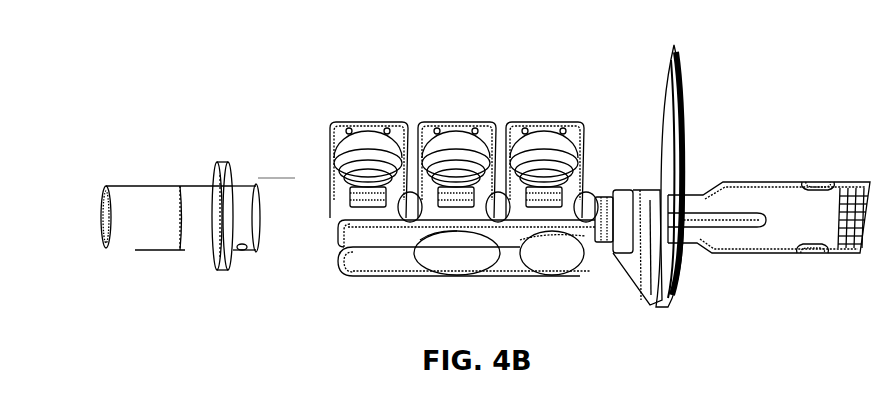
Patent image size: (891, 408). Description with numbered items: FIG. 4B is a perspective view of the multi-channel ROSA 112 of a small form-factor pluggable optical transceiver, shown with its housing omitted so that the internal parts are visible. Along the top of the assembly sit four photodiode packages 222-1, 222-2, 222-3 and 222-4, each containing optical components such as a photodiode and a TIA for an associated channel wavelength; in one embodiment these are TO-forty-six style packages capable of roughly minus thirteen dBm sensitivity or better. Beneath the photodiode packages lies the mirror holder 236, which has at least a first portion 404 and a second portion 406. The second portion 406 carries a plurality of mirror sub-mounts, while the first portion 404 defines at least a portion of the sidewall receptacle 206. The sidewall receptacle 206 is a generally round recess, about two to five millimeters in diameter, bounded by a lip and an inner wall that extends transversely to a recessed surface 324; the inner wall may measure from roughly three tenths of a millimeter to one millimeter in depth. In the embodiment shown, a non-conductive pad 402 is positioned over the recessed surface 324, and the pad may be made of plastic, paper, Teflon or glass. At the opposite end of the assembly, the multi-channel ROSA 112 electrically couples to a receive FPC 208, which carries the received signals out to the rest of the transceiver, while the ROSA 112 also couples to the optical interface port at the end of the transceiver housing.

The multi-channel ROSA 112 is at (203, 117).
The photodiode package 222-1 is at (350, 140).
The photodiode package 222-2 is at (447, 140).
The photodiode package 222-3 is at (550, 142).
The photodiode package 222-4 is at (637, 200).
The second portion of the mirror holder 406 is at (333, 232).
The first portion of the mirror holder 404 is at (340, 257).
The mirror holder 236 is at (392, 268).
The recessed surface 324 is at (431, 241).
The non-conductive pad 402 is at (473, 262).
The sidewall receptacle 206 is at (467, 282).
The receive FPC 208 is at (765, 253).